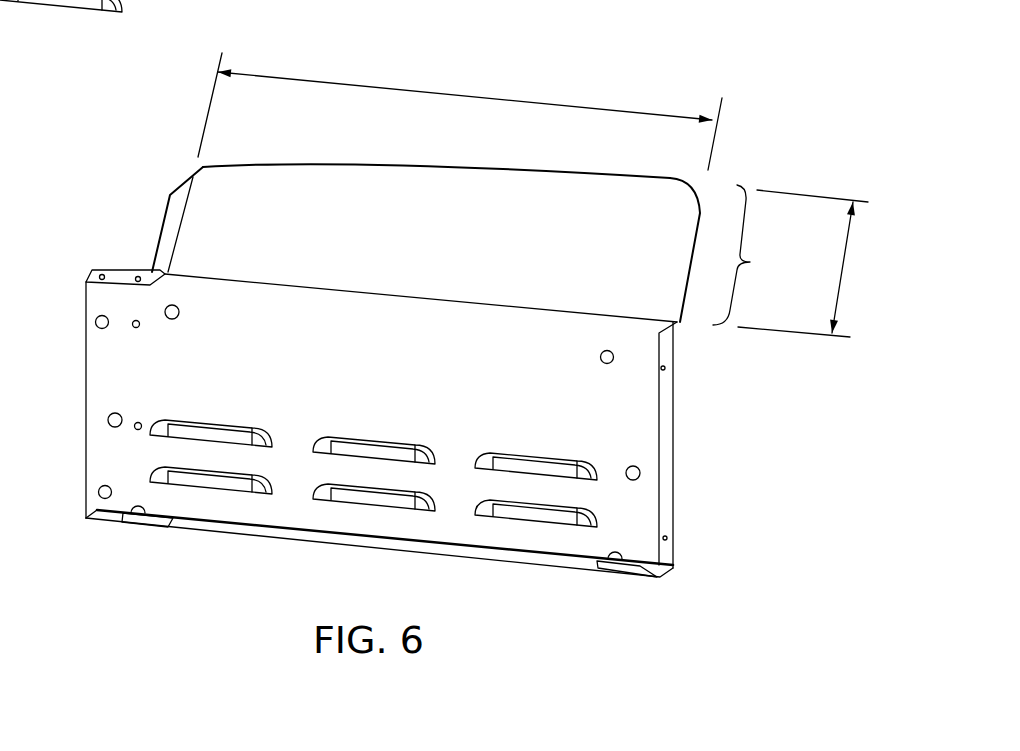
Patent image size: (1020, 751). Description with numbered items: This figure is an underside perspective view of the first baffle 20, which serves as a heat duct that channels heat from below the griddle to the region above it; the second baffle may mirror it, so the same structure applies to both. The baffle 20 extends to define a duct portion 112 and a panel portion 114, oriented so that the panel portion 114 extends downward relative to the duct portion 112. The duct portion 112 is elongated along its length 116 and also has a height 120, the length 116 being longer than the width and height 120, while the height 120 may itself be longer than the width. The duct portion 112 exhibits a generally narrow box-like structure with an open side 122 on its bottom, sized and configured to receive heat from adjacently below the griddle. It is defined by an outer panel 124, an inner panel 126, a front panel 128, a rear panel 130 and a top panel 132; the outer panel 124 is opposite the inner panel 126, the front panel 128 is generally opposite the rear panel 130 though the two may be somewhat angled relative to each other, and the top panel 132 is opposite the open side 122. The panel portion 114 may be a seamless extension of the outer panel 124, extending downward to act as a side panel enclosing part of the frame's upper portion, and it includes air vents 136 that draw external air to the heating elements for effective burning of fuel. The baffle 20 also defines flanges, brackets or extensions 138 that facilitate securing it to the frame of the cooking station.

The first baffle 20 is at (790, 77).
The duct portion 112 is at (755, 255).
The panel portion 114 is at (688, 328).
The length 116 is at (348, 84).
The height 120 is at (843, 273).
The open side 122 is at (437, 299).
The outer panel 124 is at (165, 277).
The inner panel 126 is at (578, 207).
The front panel 128 is at (173, 208).
The rear panel 130 is at (700, 240).
The top panel 132 is at (437, 163).
The air vents 136 is at (225, 425).
The flanges, brackets or extensions 138 is at (205, 522).